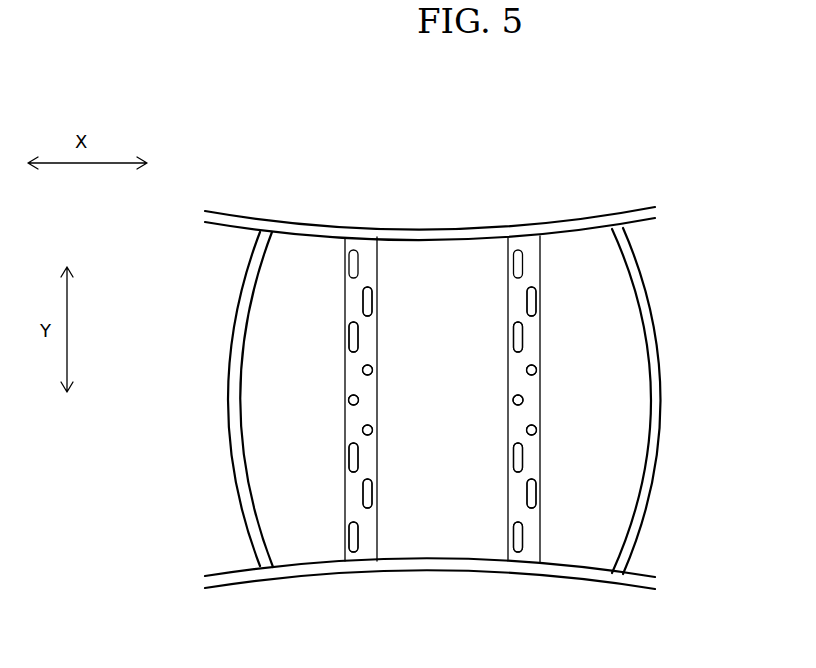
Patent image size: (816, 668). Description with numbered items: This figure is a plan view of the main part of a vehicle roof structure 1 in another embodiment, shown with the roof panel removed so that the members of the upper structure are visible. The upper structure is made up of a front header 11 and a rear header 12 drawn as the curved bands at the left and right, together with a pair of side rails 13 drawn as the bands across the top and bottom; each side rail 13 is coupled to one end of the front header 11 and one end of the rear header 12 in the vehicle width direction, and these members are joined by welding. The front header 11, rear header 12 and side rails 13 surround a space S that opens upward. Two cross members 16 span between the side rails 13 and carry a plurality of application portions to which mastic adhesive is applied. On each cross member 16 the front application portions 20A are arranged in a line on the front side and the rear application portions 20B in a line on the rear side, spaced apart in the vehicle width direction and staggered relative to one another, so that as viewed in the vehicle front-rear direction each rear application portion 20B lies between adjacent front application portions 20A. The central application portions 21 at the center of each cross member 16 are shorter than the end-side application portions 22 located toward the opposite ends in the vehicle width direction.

The vehicle roof structure 1 is at (262, 118).
The front header 11 is at (247, 523).
The rear header 12 is at (625, 248).
The side rail 13 is at (323, 236).
The cross member 16 is at (345, 480).
The front application portion 20A is at (357, 337).
The rear application portion 20B is at (372, 300).
The central application portion 21 is at (361, 370).
The end-side application portion 22 is at (347, 262).
The space S is at (405, 265).